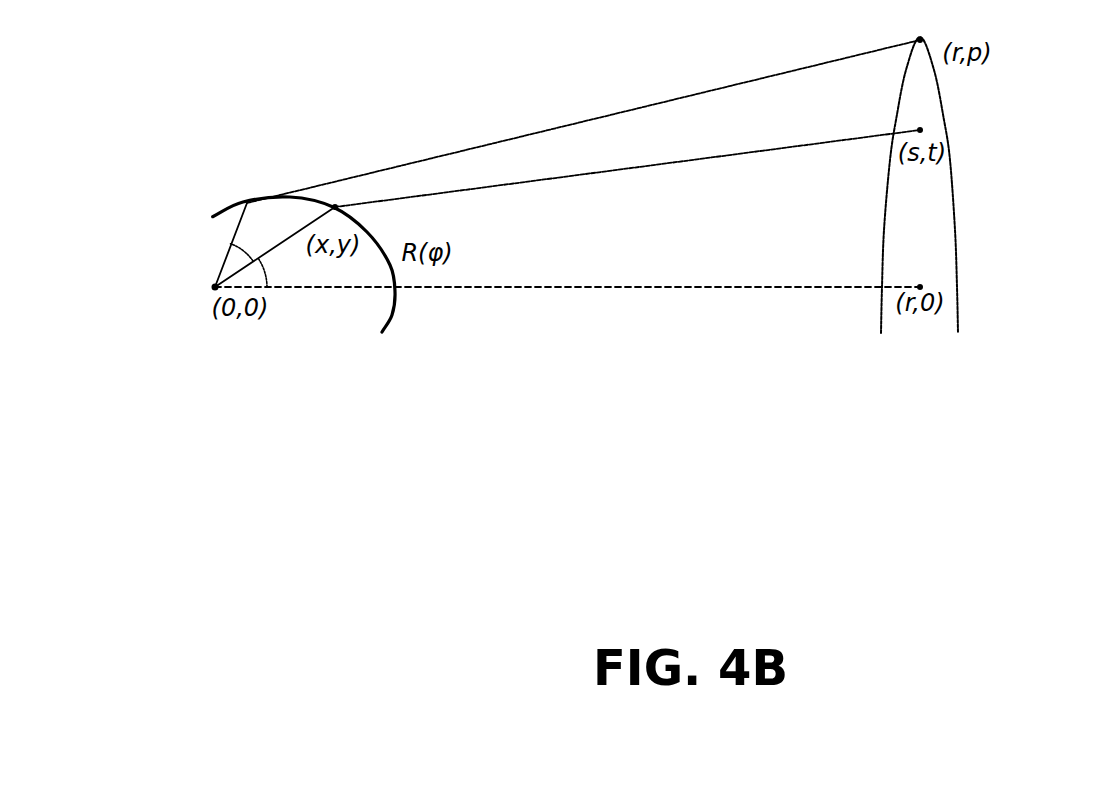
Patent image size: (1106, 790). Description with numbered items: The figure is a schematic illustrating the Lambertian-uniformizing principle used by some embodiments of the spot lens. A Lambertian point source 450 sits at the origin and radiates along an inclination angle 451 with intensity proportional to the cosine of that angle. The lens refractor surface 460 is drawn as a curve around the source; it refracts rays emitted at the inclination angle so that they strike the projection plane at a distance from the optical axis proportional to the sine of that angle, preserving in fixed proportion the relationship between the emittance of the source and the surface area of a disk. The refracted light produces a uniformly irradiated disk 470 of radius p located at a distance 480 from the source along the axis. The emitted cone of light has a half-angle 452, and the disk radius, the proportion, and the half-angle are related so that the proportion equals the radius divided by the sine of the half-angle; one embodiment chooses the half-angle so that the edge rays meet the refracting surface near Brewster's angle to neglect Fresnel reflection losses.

The Lambertian point source 450 is at (213, 280).
The inclination φ 451 is at (270, 284).
The half-angle β 452 is at (240, 257).
The refractor surface R(φ) 460 is at (261, 197).
The uniformly irradiated disk 470 is at (947, 102).
The distance r 480 is at (695, 287).